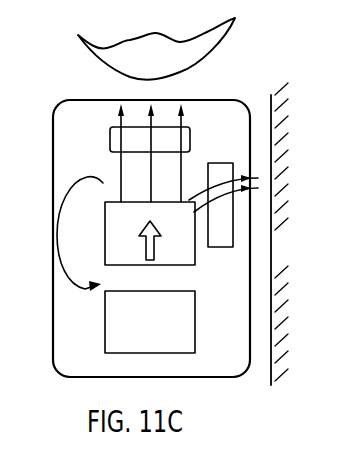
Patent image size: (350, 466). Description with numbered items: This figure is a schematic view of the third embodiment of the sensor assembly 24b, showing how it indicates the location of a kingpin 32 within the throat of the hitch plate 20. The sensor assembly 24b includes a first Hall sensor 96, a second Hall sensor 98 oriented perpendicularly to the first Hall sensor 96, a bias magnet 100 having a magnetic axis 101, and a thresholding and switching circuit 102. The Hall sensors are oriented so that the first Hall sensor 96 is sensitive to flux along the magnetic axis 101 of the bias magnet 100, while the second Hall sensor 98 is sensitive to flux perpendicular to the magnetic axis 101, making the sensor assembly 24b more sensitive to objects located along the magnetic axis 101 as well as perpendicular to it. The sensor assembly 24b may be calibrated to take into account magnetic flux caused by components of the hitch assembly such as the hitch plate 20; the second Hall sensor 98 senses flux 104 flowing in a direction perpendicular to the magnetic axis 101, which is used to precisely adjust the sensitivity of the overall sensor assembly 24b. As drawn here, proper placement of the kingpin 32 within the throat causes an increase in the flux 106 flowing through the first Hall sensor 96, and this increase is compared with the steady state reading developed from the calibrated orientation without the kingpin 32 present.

The kingpin 32 is at (235, 18).
The sensor assembly 24b is at (240, 101).
The hitch plate 20 is at (300, 253).
The first Hall sensor 96 is at (138, 127).
The flux 106 is at (184, 174).
The magnetic axis 101 is at (143, 223).
The bias magnet 100 is at (120, 200).
The thresholding and switching circuit 102 is at (105, 302).
The flux 104 is at (222, 247).
The second Hall sensor 98 is at (219, 163).